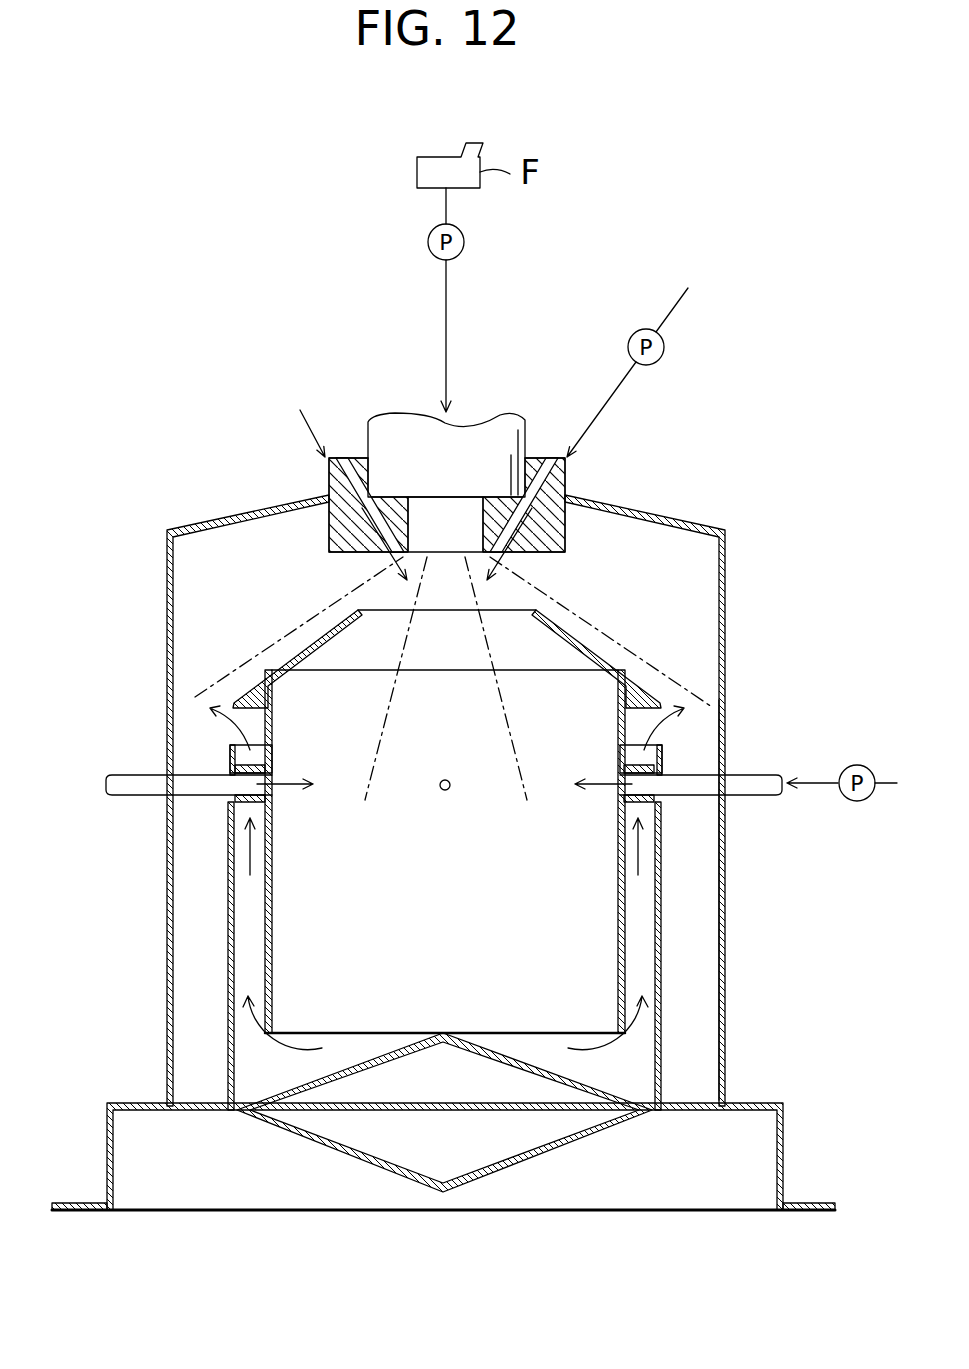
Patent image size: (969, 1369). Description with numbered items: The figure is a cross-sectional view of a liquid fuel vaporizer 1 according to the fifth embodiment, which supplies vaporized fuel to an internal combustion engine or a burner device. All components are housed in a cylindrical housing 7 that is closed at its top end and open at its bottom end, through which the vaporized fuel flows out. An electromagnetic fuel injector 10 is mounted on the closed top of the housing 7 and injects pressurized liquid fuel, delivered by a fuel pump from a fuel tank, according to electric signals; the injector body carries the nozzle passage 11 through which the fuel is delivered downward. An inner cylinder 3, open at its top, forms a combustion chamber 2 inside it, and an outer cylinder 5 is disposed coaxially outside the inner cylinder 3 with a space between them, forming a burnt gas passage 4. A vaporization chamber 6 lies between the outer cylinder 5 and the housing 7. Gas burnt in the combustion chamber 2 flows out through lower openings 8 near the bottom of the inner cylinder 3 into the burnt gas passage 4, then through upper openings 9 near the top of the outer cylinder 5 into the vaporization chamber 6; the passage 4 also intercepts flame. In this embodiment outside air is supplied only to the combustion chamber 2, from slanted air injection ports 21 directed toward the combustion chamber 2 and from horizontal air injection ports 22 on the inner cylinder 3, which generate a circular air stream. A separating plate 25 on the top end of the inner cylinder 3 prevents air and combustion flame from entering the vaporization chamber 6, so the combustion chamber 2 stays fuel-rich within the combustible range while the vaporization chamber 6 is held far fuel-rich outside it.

The liquid fuel vaporizer 1 is at (761, 579).
The combustion chamber 2 is at (431, 877).
The inner cylinder 3 is at (618, 887).
The burnt gas passage 4 is at (637, 920).
The outer cylinder 5 is at (660, 953).
The vaporization chamber 6 is at (692, 920).
The housing 7 is at (726, 880).
The lower openings 8 is at (272, 1043).
The upper openings 9 is at (272, 732).
The electromagnetic fuel injector 10 is at (483, 448).
The nozzle passage 11 is at (430, 552).
The air injection ports 21 is at (325, 497).
The horizontal air injection ports 22 is at (205, 773).
The separating plate 25 is at (557, 632).